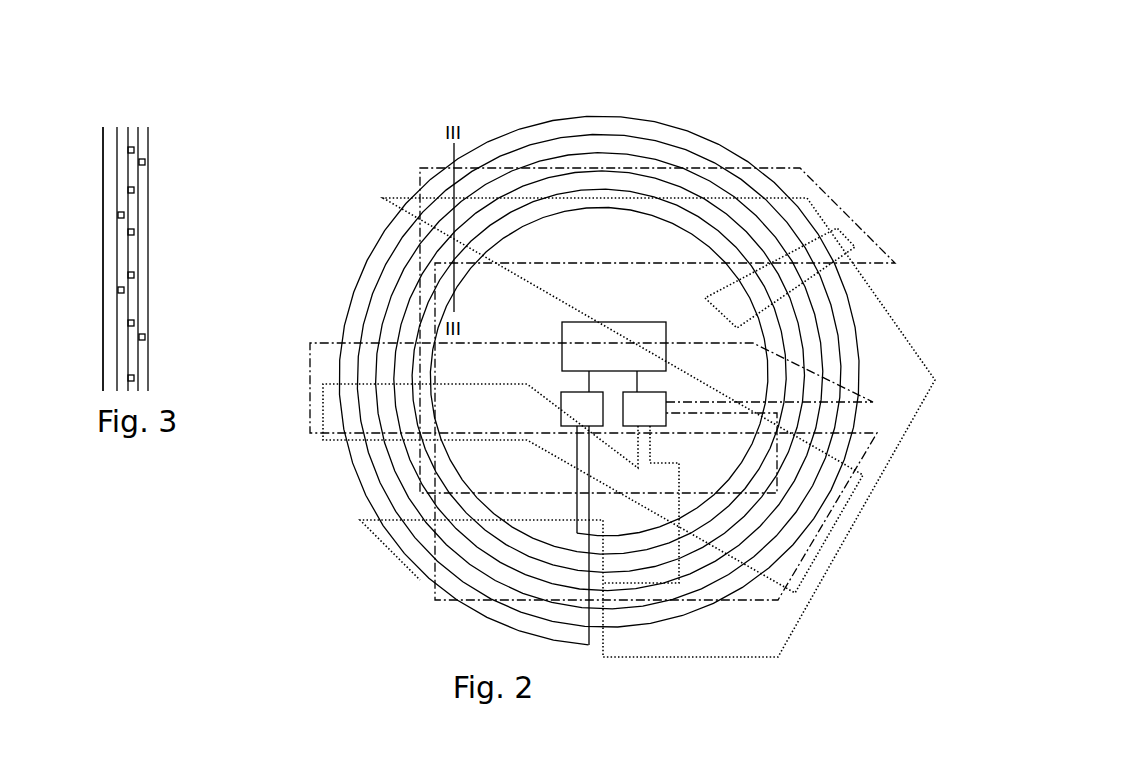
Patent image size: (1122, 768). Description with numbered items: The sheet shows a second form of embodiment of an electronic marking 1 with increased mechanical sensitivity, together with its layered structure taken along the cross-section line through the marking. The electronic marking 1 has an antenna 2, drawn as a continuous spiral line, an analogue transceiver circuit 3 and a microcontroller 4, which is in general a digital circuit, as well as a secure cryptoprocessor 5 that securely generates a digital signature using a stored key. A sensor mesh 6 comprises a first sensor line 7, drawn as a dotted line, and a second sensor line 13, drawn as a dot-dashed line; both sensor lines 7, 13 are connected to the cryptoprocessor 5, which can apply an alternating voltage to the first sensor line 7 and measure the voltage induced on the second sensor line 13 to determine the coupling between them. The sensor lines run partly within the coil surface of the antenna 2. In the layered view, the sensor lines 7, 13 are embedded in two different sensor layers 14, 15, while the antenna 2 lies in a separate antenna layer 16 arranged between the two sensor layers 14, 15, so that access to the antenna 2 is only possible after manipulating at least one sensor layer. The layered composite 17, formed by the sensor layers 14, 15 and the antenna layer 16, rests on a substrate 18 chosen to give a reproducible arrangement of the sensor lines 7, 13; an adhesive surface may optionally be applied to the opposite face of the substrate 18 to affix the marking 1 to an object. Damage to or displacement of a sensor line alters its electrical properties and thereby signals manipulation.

In FIG. 2, the electronic marking 1 is at (862, 176).
In FIG. 3, the antenna 2 is at (133, 189).
In FIG. 2, the antenna 2 is at (647, 138).
In FIG. 2, the analogue transceiver circuit 3 is at (582, 409).
In FIG. 2, the microcontroller 4 is at (614, 357).
In FIG. 2, the secure cryptoprocessor 5 is at (644, 409).
In FIG. 2, the sensor mesh 6 is at (835, 622).
In FIG. 3, the first sensor line 7 is at (119, 290).
In FIG. 2, the first sensor line 7 is at (627, 658).
In FIG. 3, the second sensor line 13 is at (146, 162).
In FIG. 2, the second sensor line 13 is at (867, 237).
In FIG. 3, the sensor layer 14 is at (121, 128).
In FIG. 3, the sensor layer 15 is at (143, 223).
In FIG. 3, the antenna layer 16 is at (132, 257).
In FIG. 3, the layered composite 17 is at (140, 104).
In FIG. 3, the substrate 18 is at (108, 156).